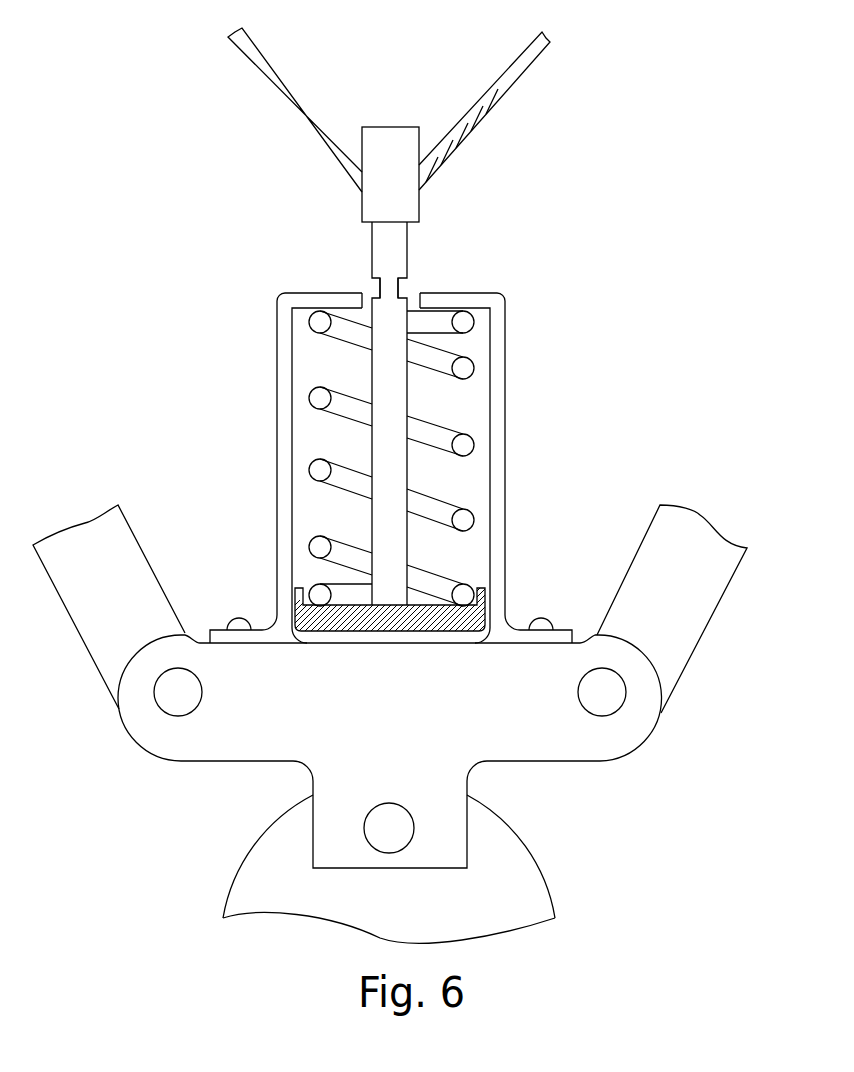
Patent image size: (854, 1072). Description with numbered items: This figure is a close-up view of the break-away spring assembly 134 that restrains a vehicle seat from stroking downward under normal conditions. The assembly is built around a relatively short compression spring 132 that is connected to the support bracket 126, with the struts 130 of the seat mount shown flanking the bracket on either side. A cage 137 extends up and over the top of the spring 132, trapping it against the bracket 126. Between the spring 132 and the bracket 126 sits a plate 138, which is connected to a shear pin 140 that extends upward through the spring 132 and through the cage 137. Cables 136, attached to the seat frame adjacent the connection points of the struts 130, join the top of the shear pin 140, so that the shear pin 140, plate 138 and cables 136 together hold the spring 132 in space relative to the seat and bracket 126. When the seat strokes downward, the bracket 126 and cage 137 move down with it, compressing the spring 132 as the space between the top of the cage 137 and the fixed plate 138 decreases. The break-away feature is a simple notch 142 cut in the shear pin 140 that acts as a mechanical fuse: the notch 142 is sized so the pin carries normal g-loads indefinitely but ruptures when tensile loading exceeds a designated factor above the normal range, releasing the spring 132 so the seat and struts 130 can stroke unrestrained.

The support bracket 126 is at (570, 763).
The struts 130 is at (127, 518).
The compression spring 132 is at (465, 367).
The spring assembly 134 is at (185, 287).
The cables 136 is at (268, 58).
The cage 137 is at (505, 430).
The plate 138 is at (350, 630).
The shear pin 140 is at (373, 451).
The notch 142 is at (412, 281).